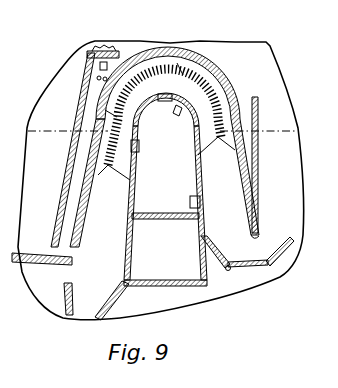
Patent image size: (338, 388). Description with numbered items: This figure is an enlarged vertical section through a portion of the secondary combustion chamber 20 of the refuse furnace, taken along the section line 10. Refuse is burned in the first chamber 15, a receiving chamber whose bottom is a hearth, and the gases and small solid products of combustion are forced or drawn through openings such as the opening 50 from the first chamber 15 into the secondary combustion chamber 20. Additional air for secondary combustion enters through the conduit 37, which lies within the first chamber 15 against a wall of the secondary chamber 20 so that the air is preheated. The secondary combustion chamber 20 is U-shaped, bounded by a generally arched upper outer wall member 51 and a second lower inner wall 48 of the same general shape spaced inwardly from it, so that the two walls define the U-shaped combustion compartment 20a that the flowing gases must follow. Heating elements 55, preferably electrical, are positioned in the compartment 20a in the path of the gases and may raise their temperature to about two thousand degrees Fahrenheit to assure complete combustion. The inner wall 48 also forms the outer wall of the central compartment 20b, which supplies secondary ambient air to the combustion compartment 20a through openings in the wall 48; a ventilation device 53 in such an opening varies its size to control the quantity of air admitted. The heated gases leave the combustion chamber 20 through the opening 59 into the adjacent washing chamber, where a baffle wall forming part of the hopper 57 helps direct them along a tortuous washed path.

The section line 10- 10 is at (53, 120).
The first chamber 15 is at (72, 95).
The secondary chamber 20 is at (242, 67).
The U-shaped combustion compartment 20a is at (97, 207).
The central compartment 20b is at (171, 206).
The conduit 37 is at (73, 194).
The second lower inner wall 48 is at (192, 143).
The opening 50 is at (72, 287).
The arched upper outer wall member 51 is at (173, 47).
The ventilation device 53 is at (192, 110).
The heating elements 55 is at (194, 104).
The hopper 57 is at (270, 262).
The opening 59 is at (262, 241).